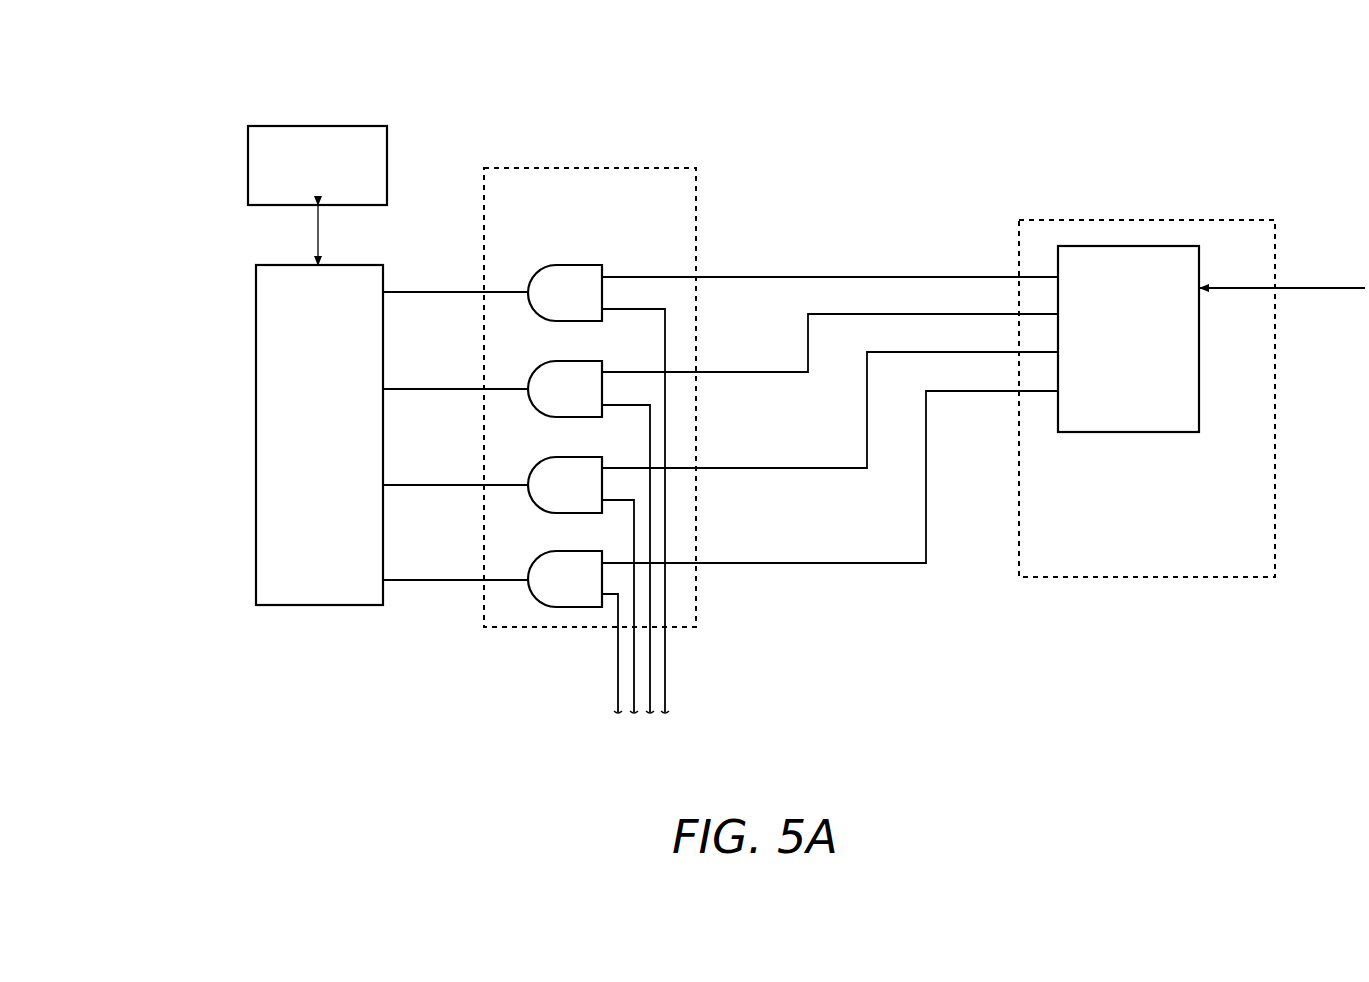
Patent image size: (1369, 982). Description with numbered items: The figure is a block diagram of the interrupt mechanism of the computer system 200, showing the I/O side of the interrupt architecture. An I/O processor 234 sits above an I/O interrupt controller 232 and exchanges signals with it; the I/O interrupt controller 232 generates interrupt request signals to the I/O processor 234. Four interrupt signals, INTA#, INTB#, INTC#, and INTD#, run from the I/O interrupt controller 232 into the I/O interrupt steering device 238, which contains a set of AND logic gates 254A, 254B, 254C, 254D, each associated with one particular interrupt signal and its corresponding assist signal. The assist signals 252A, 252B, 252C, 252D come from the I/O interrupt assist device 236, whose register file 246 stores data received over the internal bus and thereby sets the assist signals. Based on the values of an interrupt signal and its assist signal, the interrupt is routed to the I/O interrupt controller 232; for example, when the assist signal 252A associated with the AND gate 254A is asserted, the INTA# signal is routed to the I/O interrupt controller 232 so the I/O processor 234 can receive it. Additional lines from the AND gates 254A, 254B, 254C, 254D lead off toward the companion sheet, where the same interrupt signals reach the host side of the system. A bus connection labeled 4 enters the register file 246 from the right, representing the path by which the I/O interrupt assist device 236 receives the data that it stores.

The computer system 200 is at (196, 116).
The I/O processor 234 is at (388, 164).
The I/O interrupt controller 232 is at (364, 265).
The I/O interrupt steering device 238 is at (585, 168).
The AND gate 254A is at (600, 265).
The AND gate 254B is at (582, 362).
The AND gate 254C is at (562, 457).
The AND gate 254D is at (547, 551).
The assist signal 252A is at (773, 277).
The assist signal 252B is at (830, 314).
The assist signal 252C is at (770, 468).
The assist signal 252D is at (816, 563).
The I/O interrupt assist device 236 is at (1226, 220).
The register file 246 is at (1058, 267).
The bus 4 is at (1312, 299).